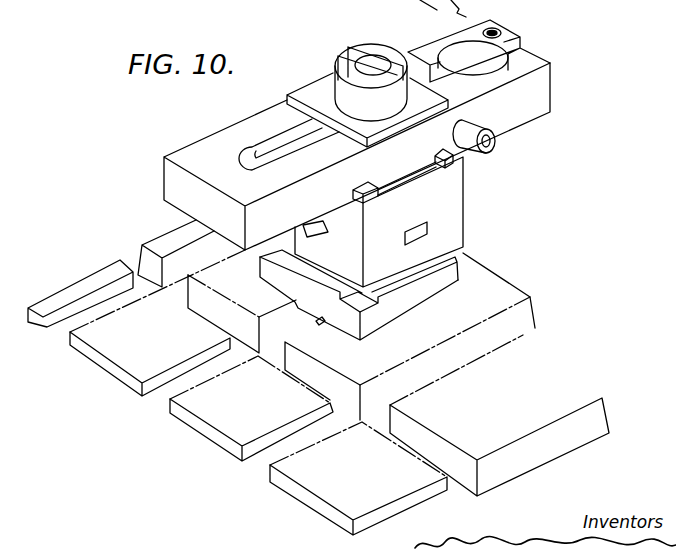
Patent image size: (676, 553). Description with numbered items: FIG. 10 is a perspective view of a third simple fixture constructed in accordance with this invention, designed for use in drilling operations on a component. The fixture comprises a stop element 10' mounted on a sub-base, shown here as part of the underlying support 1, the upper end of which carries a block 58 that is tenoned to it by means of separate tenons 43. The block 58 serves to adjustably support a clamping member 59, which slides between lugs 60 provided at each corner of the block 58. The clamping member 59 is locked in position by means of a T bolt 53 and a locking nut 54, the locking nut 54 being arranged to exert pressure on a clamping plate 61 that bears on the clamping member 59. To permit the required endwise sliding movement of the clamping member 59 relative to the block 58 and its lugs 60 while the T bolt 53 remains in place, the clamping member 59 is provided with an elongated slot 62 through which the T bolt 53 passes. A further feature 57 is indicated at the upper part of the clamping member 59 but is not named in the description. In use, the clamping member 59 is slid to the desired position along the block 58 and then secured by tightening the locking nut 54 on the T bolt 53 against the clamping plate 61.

The base / workpiece blocks 1 is at (518, 300).
The stop element 10' is at (401, 222).
The tenons 43 is at (323, 240).
The T bolt 53 is at (373, 66).
The locking nut 54 is at (344, 62).
The set screw hole 57 is at (492, 19).
The block 58 is at (455, 191).
The clamping member 59 is at (520, 113).
The lugs 60 is at (455, 160).
The clamping plate 61 is at (320, 98).
The elongated slot 62 is at (282, 148).